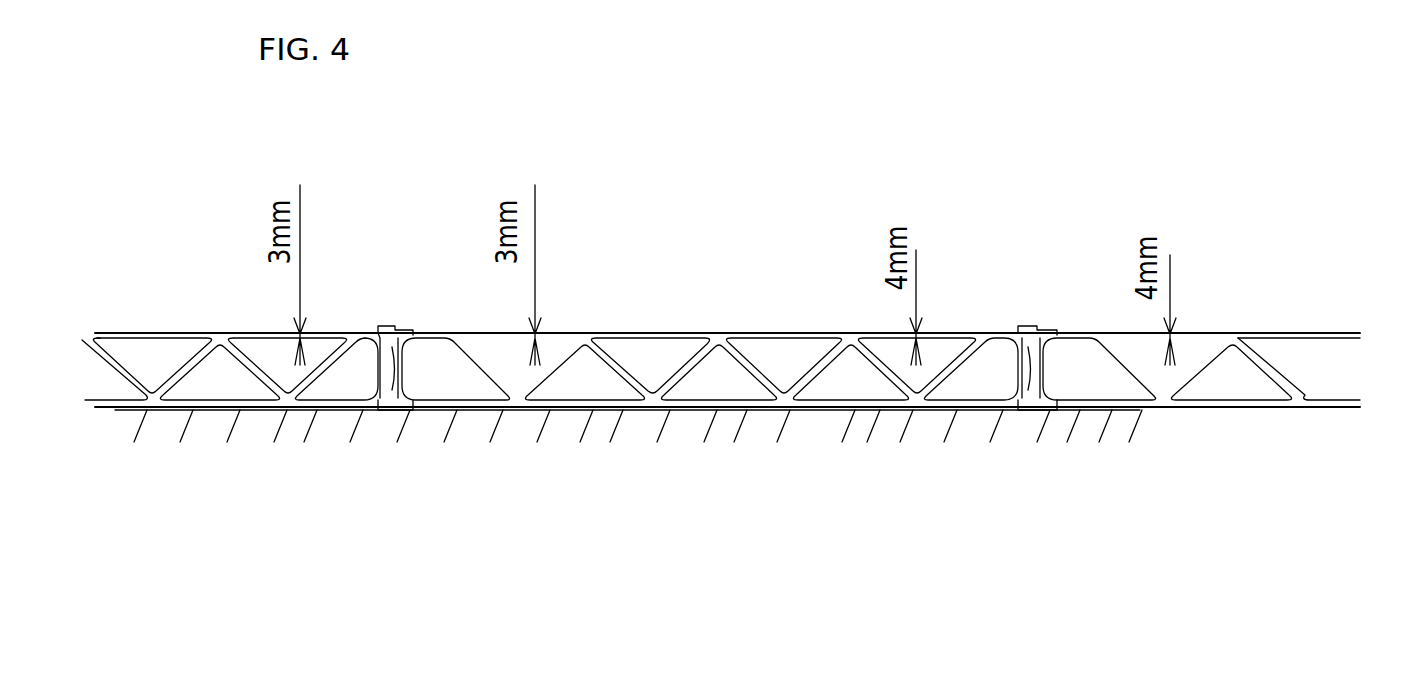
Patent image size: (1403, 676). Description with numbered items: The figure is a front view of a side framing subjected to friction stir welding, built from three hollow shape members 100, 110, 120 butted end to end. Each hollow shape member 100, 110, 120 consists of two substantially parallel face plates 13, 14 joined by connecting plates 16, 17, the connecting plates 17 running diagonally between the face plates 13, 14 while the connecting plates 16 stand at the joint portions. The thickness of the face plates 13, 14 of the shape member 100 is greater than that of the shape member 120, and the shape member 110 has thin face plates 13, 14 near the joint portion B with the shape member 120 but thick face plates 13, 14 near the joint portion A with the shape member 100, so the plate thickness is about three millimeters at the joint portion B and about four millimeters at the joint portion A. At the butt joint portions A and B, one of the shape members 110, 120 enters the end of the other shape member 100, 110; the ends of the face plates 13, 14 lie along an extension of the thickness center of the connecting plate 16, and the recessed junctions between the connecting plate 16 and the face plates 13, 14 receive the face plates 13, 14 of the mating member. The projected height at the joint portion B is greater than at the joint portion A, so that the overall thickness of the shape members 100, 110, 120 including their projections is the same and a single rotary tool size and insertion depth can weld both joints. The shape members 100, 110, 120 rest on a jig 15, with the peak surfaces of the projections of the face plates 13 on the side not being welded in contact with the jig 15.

The hollow shape member 100 is at (1305, 308).
The hollow shape member 110 is at (795, 290).
The hollow shape member 120 is at (124, 313).
The face plate 13 is at (232, 336).
The face plate 14 is at (177, 410).
The jig 15 is at (715, 404).
The connecting plate 16 is at (400, 373).
The connecting plate 17 is at (1218, 345).
The joint portion A is at (1048, 300).
The joint portion B is at (399, 298).